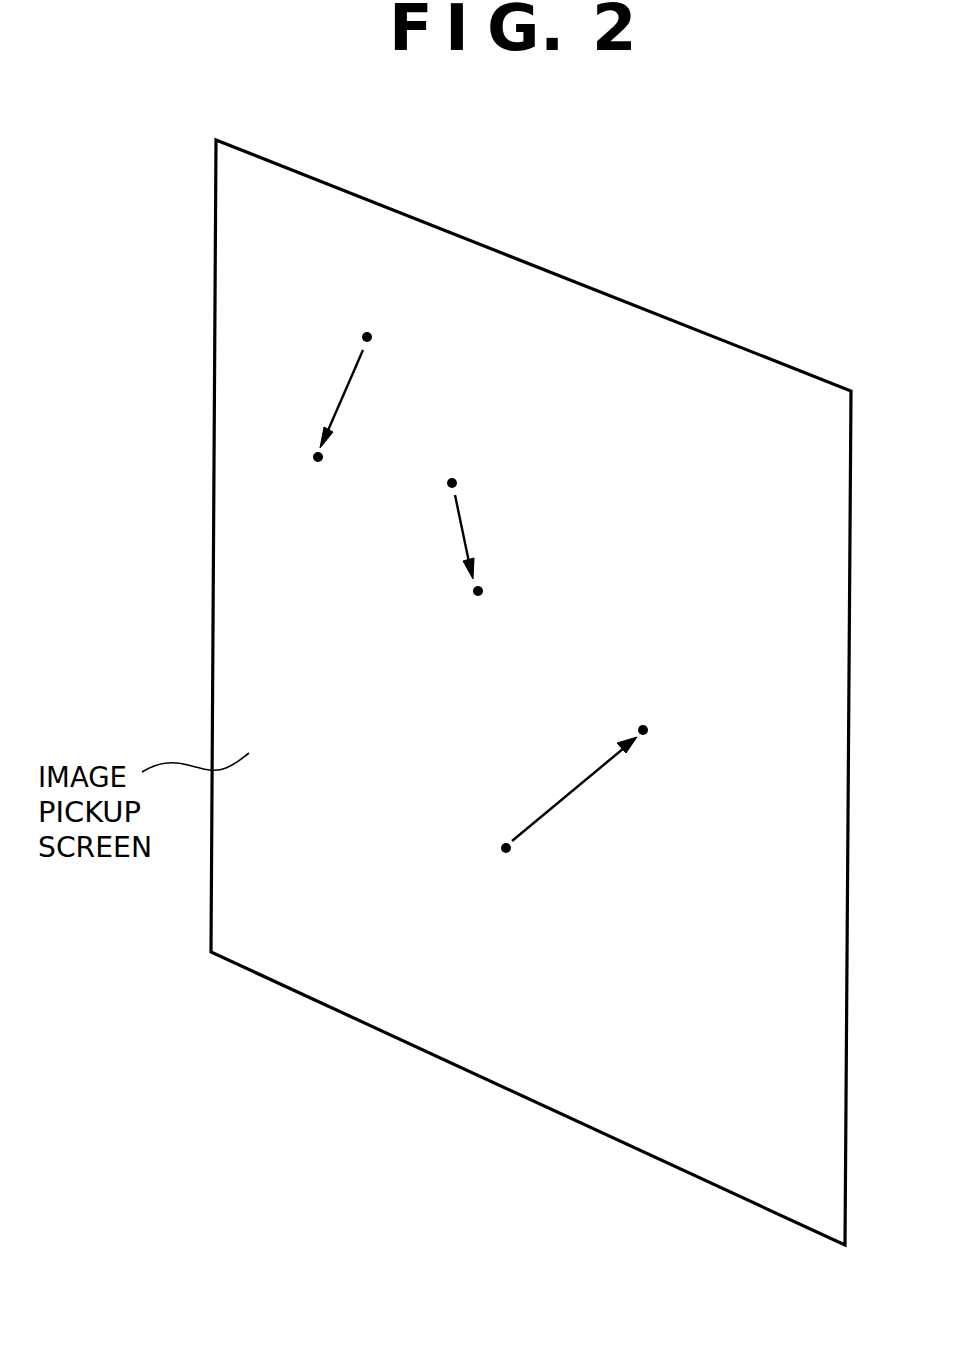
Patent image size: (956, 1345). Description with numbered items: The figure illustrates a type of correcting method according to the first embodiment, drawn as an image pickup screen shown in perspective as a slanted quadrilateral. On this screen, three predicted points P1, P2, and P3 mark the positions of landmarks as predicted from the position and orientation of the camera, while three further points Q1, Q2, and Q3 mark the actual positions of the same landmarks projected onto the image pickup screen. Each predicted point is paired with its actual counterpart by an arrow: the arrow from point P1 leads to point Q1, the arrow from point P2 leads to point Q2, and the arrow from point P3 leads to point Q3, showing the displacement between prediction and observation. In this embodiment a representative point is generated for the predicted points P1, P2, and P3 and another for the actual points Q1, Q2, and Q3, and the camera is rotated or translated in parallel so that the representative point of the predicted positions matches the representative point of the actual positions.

The predicted landmark position point P1 is at (374, 316).
The actual landmark position point Q1 is at (296, 456).
The predicted landmark position point P2 is at (451, 462).
The actual landmark position point Q2 is at (484, 612).
The predicted landmark position point P3 is at (491, 868).
The actual landmark position point Q3 is at (647, 710).